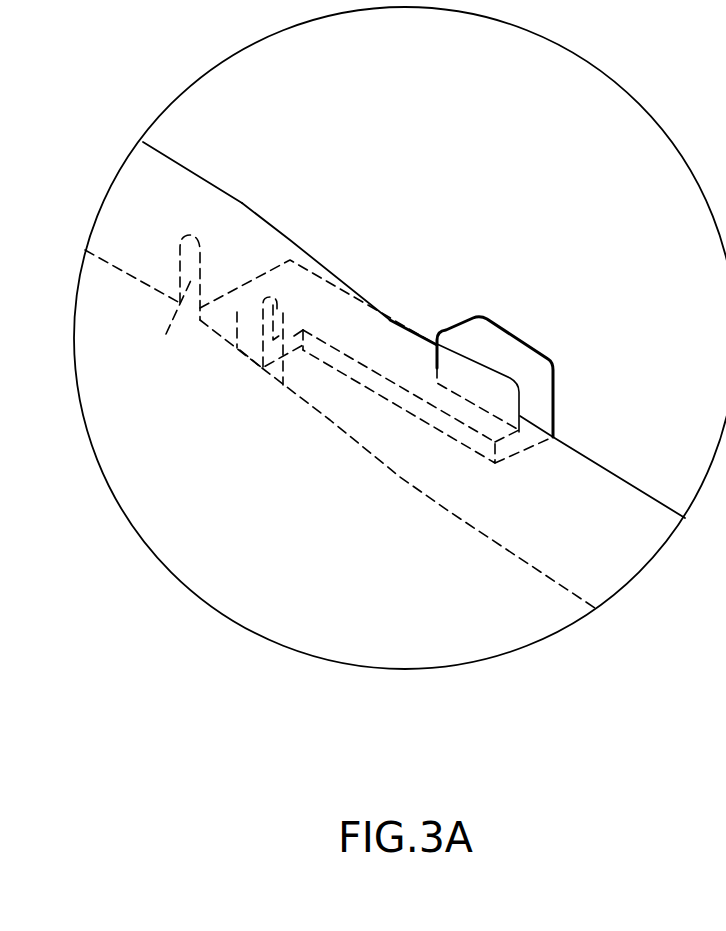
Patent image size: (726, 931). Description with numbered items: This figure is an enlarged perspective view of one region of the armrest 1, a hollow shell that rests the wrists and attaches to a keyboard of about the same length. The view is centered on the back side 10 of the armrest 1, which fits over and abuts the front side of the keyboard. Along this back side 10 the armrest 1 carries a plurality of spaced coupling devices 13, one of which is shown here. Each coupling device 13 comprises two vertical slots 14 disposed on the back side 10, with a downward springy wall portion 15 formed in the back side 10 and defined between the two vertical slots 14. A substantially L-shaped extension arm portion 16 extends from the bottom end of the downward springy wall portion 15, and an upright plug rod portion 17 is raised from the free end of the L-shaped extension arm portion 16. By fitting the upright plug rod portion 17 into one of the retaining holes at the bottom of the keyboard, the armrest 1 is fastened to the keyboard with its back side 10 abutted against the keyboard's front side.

The armrest 1 is at (382, 482).
The back side 10 is at (242, 203).
The coupling device 13 is at (528, 315).
The vertical slot 14 is at (166, 334).
The downward springy wall portion 15 is at (238, 352).
The L-shaped extension arm portion 16 is at (373, 347).
The upright plug rod portion 17 is at (553, 363).